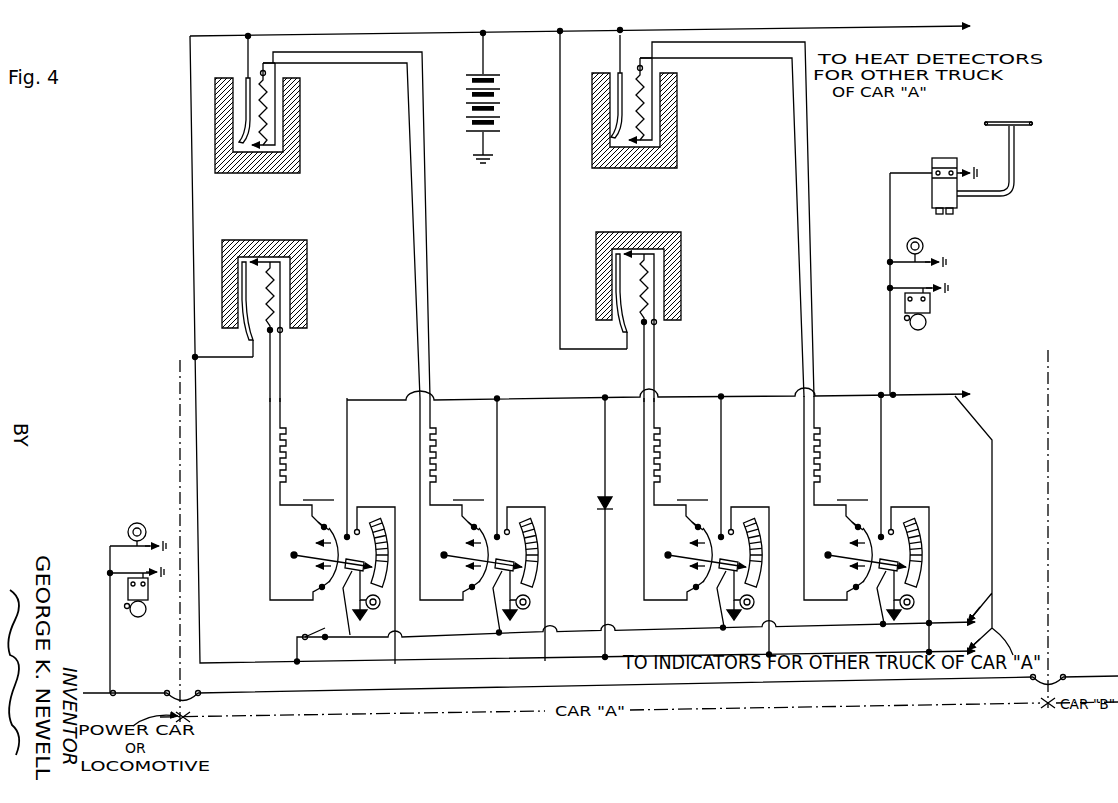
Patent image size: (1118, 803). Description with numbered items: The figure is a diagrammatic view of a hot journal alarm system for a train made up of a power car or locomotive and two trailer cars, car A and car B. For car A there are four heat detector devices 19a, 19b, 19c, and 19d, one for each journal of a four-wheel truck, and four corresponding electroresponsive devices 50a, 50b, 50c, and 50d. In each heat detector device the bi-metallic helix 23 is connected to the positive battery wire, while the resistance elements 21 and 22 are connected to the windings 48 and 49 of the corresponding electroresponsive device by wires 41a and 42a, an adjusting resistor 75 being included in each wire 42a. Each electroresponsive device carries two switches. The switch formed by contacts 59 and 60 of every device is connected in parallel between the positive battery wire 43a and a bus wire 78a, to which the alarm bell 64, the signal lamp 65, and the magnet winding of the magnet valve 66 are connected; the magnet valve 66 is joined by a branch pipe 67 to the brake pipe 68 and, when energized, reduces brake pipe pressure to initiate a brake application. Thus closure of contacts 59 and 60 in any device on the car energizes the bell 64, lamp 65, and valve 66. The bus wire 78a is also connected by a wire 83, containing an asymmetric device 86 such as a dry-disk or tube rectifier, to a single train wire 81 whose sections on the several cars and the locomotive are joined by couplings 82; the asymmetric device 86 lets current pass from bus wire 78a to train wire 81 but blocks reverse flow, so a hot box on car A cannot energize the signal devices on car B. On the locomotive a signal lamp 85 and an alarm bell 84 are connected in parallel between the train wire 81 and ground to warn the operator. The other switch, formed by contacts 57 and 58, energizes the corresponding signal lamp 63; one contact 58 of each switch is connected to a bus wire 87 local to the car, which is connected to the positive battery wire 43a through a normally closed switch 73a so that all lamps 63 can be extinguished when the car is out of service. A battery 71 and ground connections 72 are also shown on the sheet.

The heat detector device 19a is at (309, 257).
The heat detector device 19b is at (301, 130).
The heat detector device 19c is at (662, 276).
The heat detector device 19d is at (655, 120).
The resistance element 21 is at (268, 103).
The resistance element 22 is at (278, 119).
The bi-metallic helix 23 is at (244, 90).
The wire 41a is at (408, 178).
The wire 42a is at (427, 249).
The positive battery wire 43a is at (352, 34).
The winding 48 is at (320, 526).
The winding 49 is at (318, 587).
The electro-responsive device 50a is at (321, 490).
The electro-responsive device 50b is at (471, 490).
The electro-responsive device 50c is at (694, 490).
The electro-responsive device 50d is at (855, 490).
The switch contact 57 is at (384, 576).
The switch contact 58 is at (339, 603).
The switch contact 59 is at (351, 553).
The switch contact 60 is at (357, 526).
The signal lamp 63 is at (381, 600).
The bell 64 is at (931, 313).
The signal lamp 65 is at (925, 246).
The magnet valve 66 is at (940, 155).
The branch pipe 67 is at (1014, 170).
The brake pipe 68 is at (1008, 120).
The battery 71 is at (497, 106).
The ground connection 72 is at (352, 617).
The switch 73a is at (304, 635).
The adjusting resistor 75 is at (287, 453).
The bus wire 78a is at (548, 399).
The train wire 81 is at (158, 678).
The coupling 82 is at (190, 693).
The wire 83 is at (604, 435).
The alarm bell 84 is at (147, 592).
The signal lamp 85 is at (129, 528).
The asymmetric device 86 is at (603, 511).
The bus wire 87 is at (655, 624).